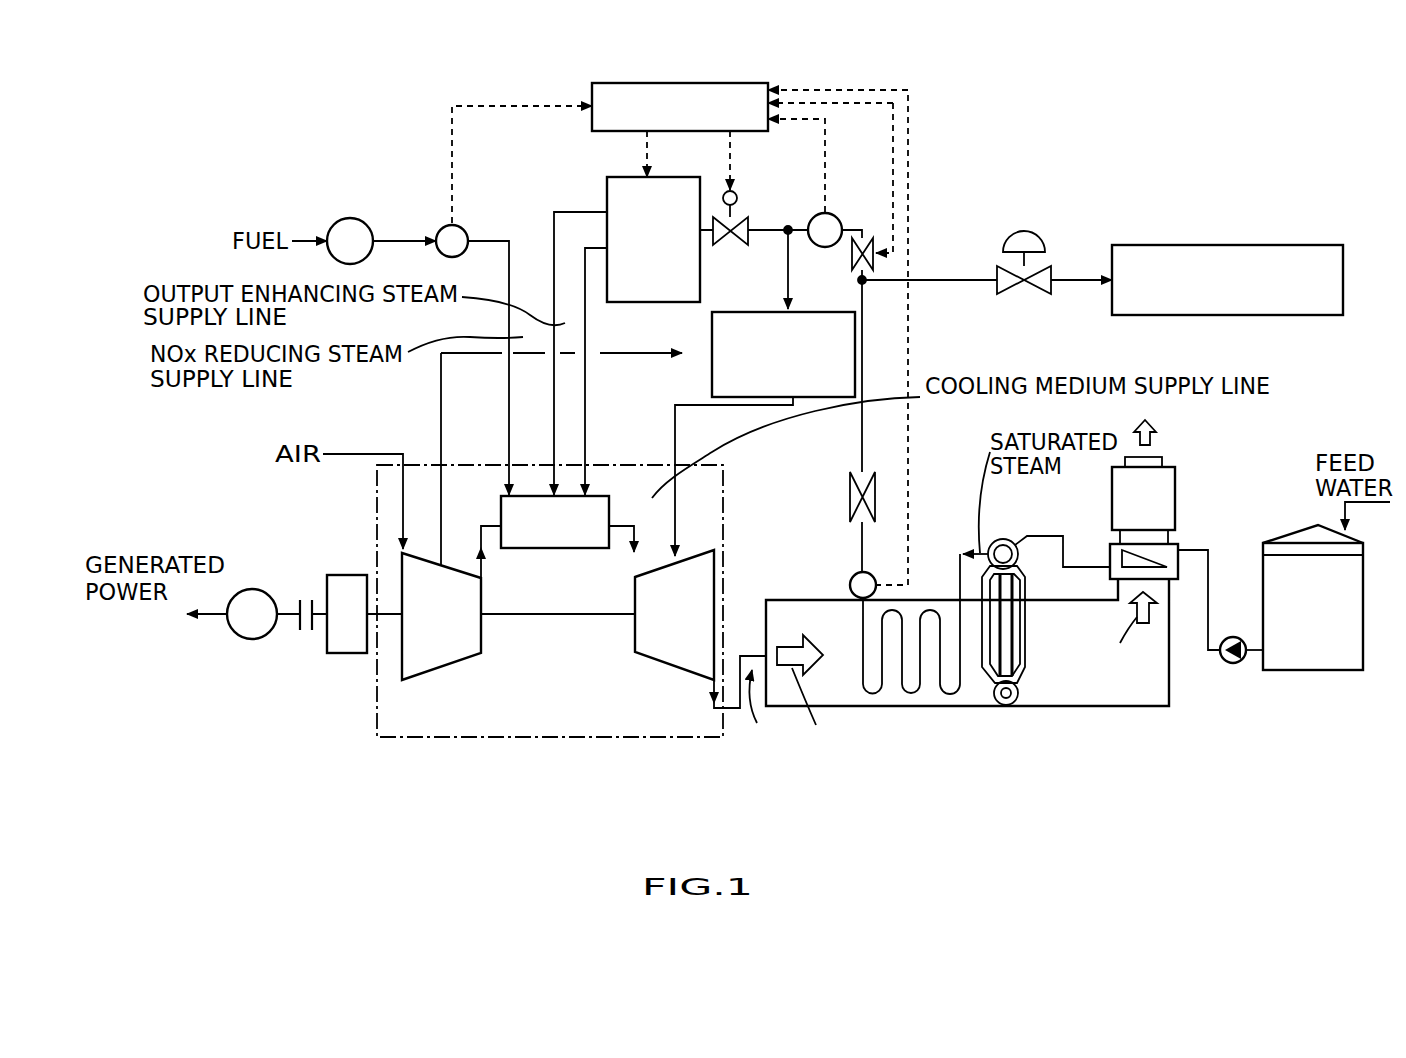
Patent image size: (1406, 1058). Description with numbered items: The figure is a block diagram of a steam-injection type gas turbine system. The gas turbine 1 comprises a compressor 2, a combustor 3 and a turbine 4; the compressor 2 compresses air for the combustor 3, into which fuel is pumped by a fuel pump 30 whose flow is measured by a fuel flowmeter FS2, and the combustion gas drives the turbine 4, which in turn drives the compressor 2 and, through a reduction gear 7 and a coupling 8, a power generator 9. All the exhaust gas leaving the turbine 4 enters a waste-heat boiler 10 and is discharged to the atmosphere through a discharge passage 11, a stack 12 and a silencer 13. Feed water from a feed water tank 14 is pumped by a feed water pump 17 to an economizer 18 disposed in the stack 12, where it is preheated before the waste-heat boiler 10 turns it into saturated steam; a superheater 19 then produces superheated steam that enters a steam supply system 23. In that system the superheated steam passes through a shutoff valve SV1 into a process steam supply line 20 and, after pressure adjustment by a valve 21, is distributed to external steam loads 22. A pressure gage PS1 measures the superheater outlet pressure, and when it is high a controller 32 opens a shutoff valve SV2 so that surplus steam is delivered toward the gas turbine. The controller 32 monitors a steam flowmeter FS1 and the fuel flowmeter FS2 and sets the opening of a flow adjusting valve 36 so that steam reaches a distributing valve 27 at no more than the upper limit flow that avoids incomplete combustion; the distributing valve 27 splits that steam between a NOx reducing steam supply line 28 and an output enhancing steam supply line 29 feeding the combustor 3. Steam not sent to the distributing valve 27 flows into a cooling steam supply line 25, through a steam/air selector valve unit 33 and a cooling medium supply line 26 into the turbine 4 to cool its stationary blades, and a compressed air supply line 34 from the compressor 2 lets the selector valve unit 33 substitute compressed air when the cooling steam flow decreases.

The gas turbine 1 is at (742, 490).
The compressor 2 is at (457, 662).
The combustor 3 is at (560, 550).
The turbine 4 is at (655, 660).
The reduction gear 7 is at (347, 575).
The coupling 8 is at (308, 598).
The power generator 9 is at (255, 590).
The waste-heat boiler 10 is at (985, 678).
The discharge passage 11 is at (1065, 688).
The stack 12 is at (1170, 535).
The silencer 13 is at (1167, 480).
The feed water tank 14 is at (1312, 672).
The feed water pump 17 is at (1240, 665).
The economizer 18 is at (1178, 578).
The superheater 19 is at (907, 617).
The process steam supply line 20 is at (948, 283).
The control valve 21 is at (1032, 293).
The external steam loads 22 is at (1202, 245).
The steam supply system 23 is at (861, 543).
The cooling steam supply line 25 is at (790, 277).
The cooling medium supply line 26 is at (690, 404).
The distributing valve 27 is at (606, 198).
The NOx reducing steam supply line 28 is at (553, 260).
The output enhancing steam supply line 29 is at (588, 337).
The fuel pump 30 is at (353, 217).
The controller 32 is at (633, 83).
The steam/air selector valve unit 33 is at (762, 312).
The compressed air supply line 34 is at (468, 357).
The flow adjusting valve 36 is at (748, 218).
The steam flowmeter FS1 is at (838, 213).
The fuel flowmeter FS2 is at (463, 224).
The shutoff valve SV1 is at (857, 493).
The shutoff valve SV2 is at (873, 235).
The pressure gage PS1 is at (851, 583).